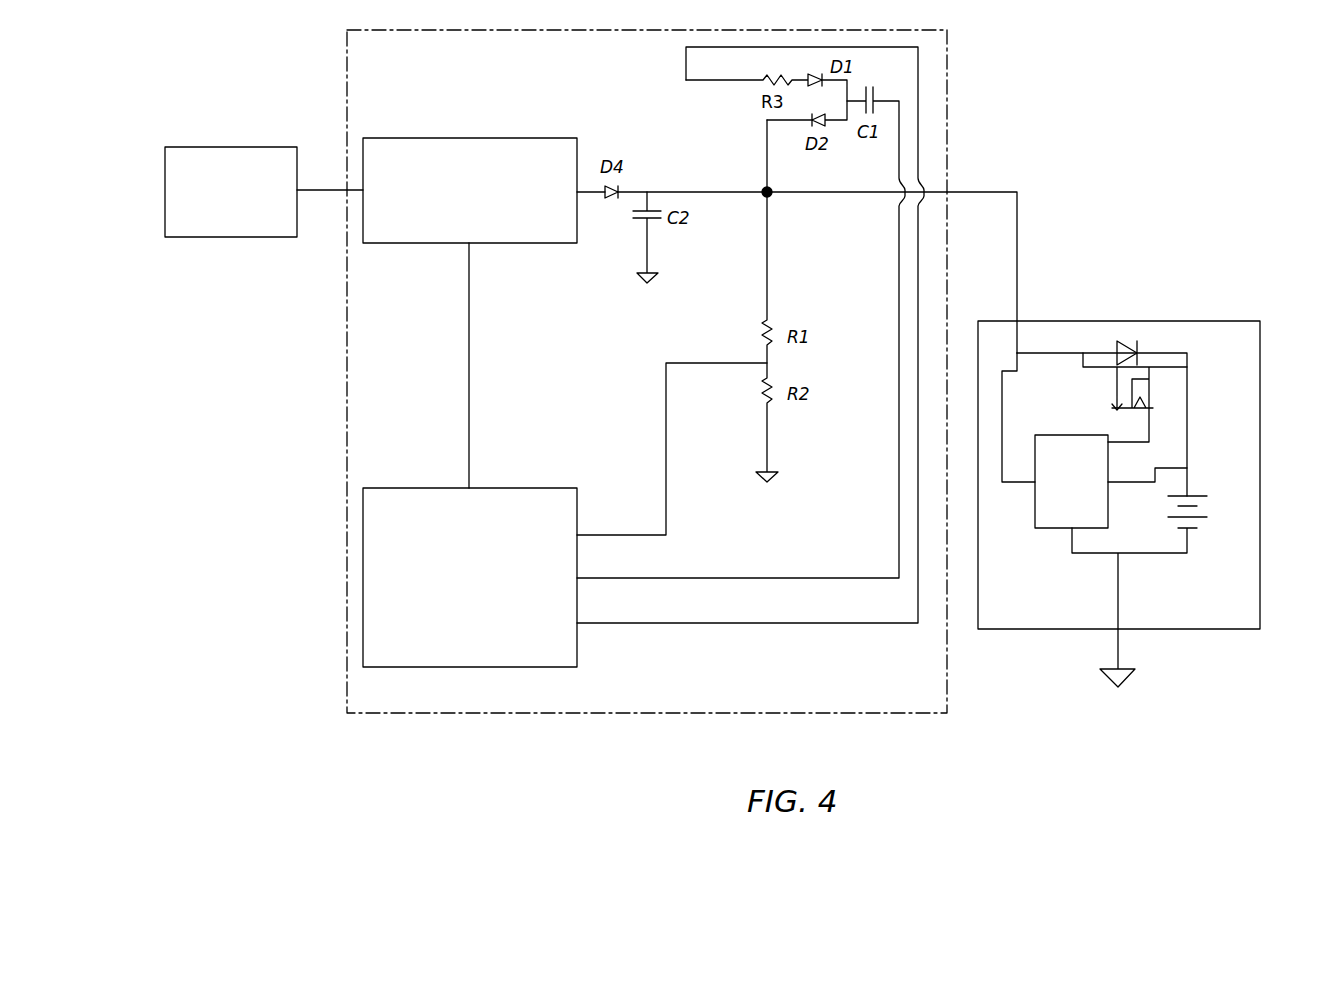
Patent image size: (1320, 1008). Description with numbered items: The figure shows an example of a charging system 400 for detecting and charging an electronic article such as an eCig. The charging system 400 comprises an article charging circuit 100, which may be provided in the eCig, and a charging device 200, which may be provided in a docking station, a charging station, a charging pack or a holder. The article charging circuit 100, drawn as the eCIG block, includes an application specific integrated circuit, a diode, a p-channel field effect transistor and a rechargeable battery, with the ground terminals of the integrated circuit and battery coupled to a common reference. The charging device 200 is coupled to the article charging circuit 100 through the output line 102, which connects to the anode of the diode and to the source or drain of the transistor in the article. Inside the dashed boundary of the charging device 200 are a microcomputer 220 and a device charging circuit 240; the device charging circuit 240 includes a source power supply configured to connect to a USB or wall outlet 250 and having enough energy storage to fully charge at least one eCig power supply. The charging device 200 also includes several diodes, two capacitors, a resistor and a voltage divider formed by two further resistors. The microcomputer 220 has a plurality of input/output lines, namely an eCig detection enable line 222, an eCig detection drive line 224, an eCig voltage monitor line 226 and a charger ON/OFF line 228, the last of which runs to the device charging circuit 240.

The charging system 400 is at (1232, 99).
The USB or wall outlet 250 is at (228, 147).
The charging device 200 is at (948, 108).
The device charging circuit 240 is at (473, 138).
The output line 102 is at (1000, 191).
The eCig detection enable line 222 is at (718, 623).
The eCig detection drive line 224 is at (825, 578).
The charger ON/OFF line 228 is at (469, 365).
The microcomputer 220 is at (513, 488).
The eCig voltage monitor line 226 is at (666, 432).
The article charging circuit 100 is at (1093, 321).